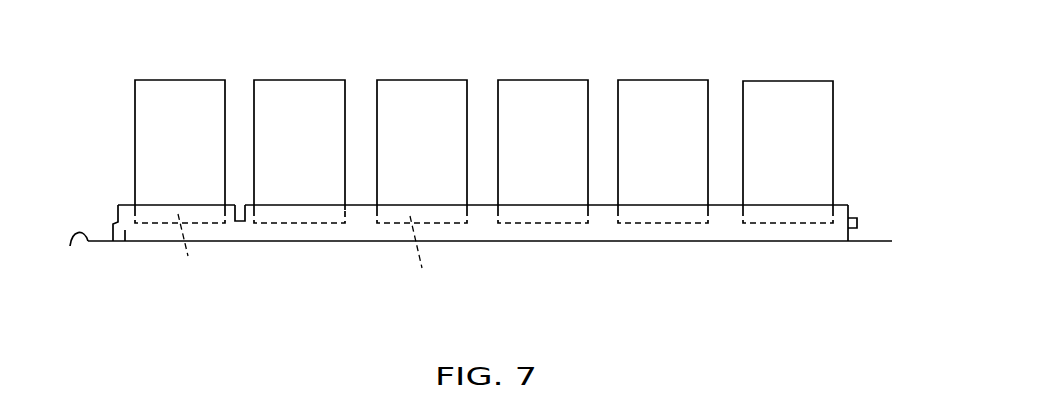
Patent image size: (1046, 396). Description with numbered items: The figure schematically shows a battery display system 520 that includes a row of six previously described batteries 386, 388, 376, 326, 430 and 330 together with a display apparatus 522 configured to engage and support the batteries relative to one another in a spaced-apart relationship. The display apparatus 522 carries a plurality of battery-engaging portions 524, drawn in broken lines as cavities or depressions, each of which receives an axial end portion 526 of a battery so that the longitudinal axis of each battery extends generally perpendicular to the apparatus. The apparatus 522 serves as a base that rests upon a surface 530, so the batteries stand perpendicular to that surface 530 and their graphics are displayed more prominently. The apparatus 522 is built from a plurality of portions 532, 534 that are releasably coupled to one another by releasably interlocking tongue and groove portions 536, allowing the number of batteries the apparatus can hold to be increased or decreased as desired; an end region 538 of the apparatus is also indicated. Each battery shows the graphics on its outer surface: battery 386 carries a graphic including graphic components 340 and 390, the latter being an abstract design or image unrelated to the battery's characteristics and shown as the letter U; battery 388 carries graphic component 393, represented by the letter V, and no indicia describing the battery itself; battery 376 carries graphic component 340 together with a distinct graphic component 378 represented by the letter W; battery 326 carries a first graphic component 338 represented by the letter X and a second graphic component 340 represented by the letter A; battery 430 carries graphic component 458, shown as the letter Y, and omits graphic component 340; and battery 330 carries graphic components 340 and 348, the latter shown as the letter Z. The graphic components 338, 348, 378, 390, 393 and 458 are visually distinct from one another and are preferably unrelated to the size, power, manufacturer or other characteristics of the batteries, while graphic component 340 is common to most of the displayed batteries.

The battery display system 520 is at (157, 47).
The display apparatus 522 is at (115, 203).
The tray end wall 538 is at (115, 222).
The portion of display apparatus 532 is at (604, 226).
The surface 530 is at (70, 246).
The portion of display apparatus 534 is at (125, 242).
The tongue and groove portions 536 is at (237, 223).
The battery-engaging portions 524 is at (149, 223).
The axial end portion 526 is at (308, 258).
The battery 386 is at (205, 86).
The battery 388 is at (323, 86).
The battery 376 is at (445, 86).
The battery 326 is at (568, 86).
The battery 430 is at (687, 86).
The battery 330 is at (793, 88).
The graphic component 390 is at (173, 124).
The graphic component 393 is at (292, 124).
The graphic component 378 is at (413, 124).
The first graphic component 338 is at (536, 124).
The graphic component 458 is at (656, 124).
The graphic component 348 is at (795, 125).
The second graphic component 340 is at (200, 179).